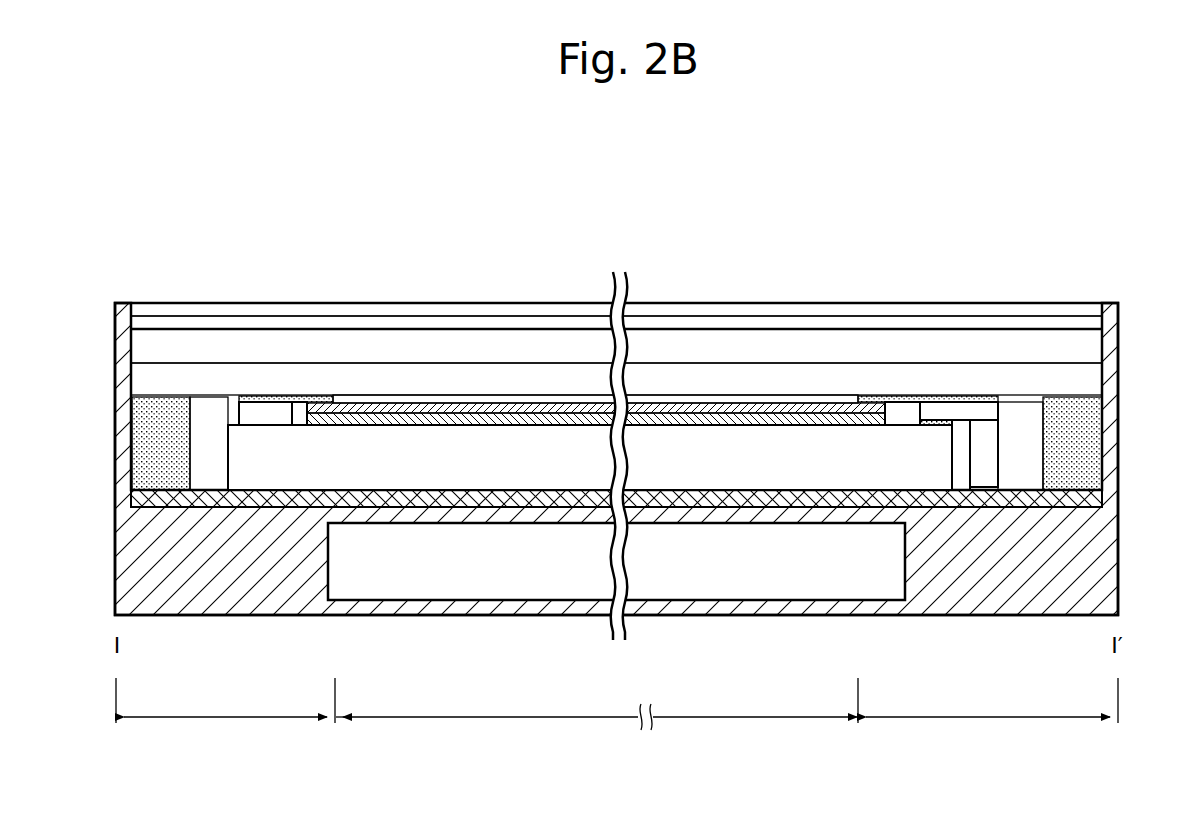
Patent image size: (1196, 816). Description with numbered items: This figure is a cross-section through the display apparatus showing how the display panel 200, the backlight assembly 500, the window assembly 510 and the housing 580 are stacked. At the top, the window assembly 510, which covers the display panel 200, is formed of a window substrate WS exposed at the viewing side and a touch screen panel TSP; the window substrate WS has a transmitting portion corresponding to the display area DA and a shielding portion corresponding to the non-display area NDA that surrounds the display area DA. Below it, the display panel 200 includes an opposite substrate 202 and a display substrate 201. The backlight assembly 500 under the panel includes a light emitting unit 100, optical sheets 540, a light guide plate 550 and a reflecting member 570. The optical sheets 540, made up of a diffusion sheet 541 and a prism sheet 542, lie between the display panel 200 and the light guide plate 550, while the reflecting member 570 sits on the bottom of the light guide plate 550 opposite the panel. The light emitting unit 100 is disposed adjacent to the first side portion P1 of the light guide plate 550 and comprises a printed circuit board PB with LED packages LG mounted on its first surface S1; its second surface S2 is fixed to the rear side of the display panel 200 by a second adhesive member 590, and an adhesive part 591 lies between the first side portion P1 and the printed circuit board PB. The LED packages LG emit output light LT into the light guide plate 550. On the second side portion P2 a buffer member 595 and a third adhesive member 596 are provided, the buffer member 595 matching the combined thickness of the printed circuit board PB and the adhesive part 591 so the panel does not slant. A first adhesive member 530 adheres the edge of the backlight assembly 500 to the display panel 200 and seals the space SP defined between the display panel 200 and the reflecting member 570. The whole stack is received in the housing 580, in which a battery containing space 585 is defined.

The light emitting unit 100 is at (951, 342).
The display panel 200 is at (616, 296).
The display substrate 201 is at (465, 372).
The opposite substrate 202 is at (405, 340).
The backlight assembly 500 is at (616, 334).
The window assembly 510 is at (617, 263).
The first adhesive member 530 is at (140, 440).
The optical sheets 540 is at (596, 311).
The diffusion sheet 541 is at (657, 407).
The prism sheet 542 is at (710, 420).
The light guide plate 550 is at (752, 438).
The reflecting member 570 is at (808, 497).
The housing 580 is at (1100, 570).
The battery containing space 585 is at (745, 566).
The second adhesive member 590 is at (880, 393).
The adhesive part 591 is at (940, 427).
The buffer member 595 is at (257, 410).
The third adhesive member 596 is at (295, 396).
The window substrate WS is at (1035, 307).
The touch screen panel TSP is at (1076, 322).
The printed circuit board PB is at (960, 410).
The LED package LG is at (985, 427).
The first surface S1 is at (993, 425).
The second surface S2 is at (930, 397).
The first side portion P1 is at (952, 480).
The second side portion P2 is at (228, 480).
The output light LT is at (955, 455).
The space SP is at (205, 470).
The non-display area NDA is at (617, 712).
The display area DA is at (596, 725).